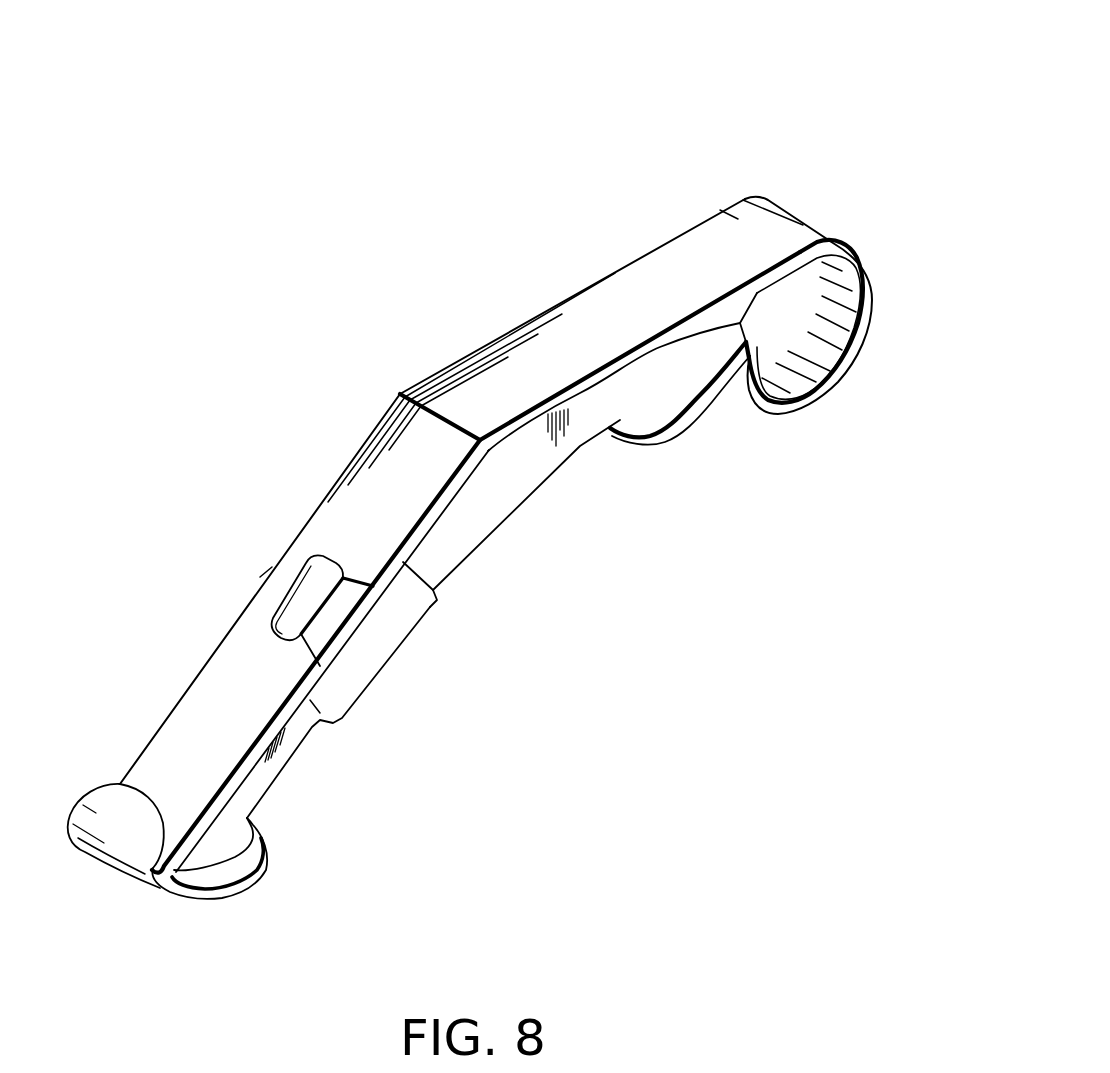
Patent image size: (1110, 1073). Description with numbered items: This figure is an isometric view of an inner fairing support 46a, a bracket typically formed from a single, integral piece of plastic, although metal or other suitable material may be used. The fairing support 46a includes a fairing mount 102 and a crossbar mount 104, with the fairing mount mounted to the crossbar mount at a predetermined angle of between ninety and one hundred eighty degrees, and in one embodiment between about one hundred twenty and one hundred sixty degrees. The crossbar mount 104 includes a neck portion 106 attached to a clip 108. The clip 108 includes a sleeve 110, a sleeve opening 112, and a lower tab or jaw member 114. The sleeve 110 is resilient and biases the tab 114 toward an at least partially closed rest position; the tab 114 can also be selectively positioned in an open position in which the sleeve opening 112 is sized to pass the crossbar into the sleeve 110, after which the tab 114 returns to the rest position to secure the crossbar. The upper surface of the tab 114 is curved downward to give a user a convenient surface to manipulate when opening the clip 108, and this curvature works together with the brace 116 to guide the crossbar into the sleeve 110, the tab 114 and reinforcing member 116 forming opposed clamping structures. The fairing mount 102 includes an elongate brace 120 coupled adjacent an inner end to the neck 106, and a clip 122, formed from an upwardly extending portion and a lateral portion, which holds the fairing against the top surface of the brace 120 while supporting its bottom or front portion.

The inner fairing support 46a is at (657, 135).
The fairing mount 102 is at (200, 657).
The crossbar mount 104 is at (612, 268).
The neck portion 106 is at (522, 320).
The clip 108 is at (842, 378).
The sleeve 110 is at (870, 296).
The sleeve opening 112 is at (742, 334).
The tab 114 is at (697, 418).
The brace 116 is at (588, 412).
The elongate brace 120 is at (405, 507).
The clip 122 is at (110, 813).